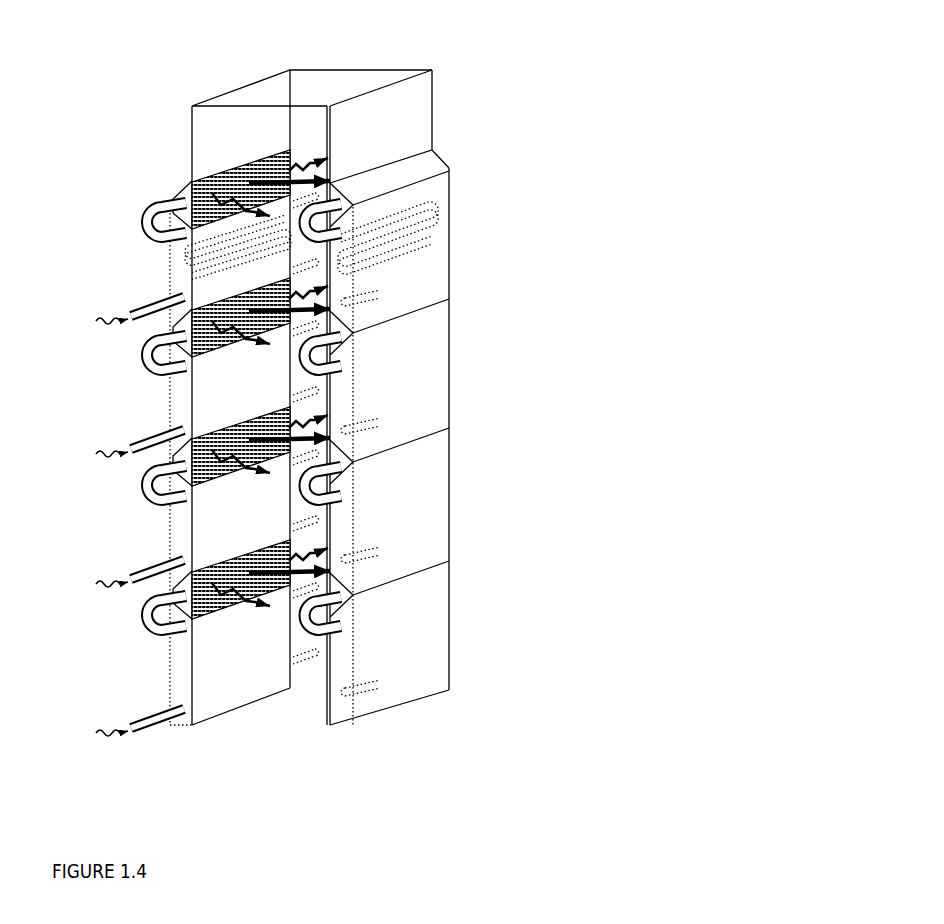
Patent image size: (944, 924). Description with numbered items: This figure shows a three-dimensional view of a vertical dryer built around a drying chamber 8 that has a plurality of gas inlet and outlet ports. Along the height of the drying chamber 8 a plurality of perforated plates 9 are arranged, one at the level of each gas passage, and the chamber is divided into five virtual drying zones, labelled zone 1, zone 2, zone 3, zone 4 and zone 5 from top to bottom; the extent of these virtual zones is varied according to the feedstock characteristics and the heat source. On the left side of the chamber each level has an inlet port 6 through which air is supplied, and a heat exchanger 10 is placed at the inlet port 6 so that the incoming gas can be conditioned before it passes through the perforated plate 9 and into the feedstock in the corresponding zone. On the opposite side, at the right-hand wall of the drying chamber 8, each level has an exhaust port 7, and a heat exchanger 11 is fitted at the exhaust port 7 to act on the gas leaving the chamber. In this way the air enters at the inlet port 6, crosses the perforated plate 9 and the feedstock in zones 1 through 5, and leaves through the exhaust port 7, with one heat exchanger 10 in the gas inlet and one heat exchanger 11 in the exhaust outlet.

The virtual drying zone one 1 is at (381, 116).
The virtual drying zone two 2 is at (389, 236).
The virtual drying zone three 3 is at (389, 353).
The virtual drying zone four 4 is at (389, 479).
The virtual drying zone five 5 is at (389, 599).
The inlet port 6 is at (175, 187).
The exhaust port 7 is at (442, 158).
The drying chamber 8 is at (485, 458).
The perforated plate 9 is at (230, 627).
The heat exchanger at inlet port 10 is at (192, 266).
The heat exchanger at exhaust port 11 is at (388, 228).